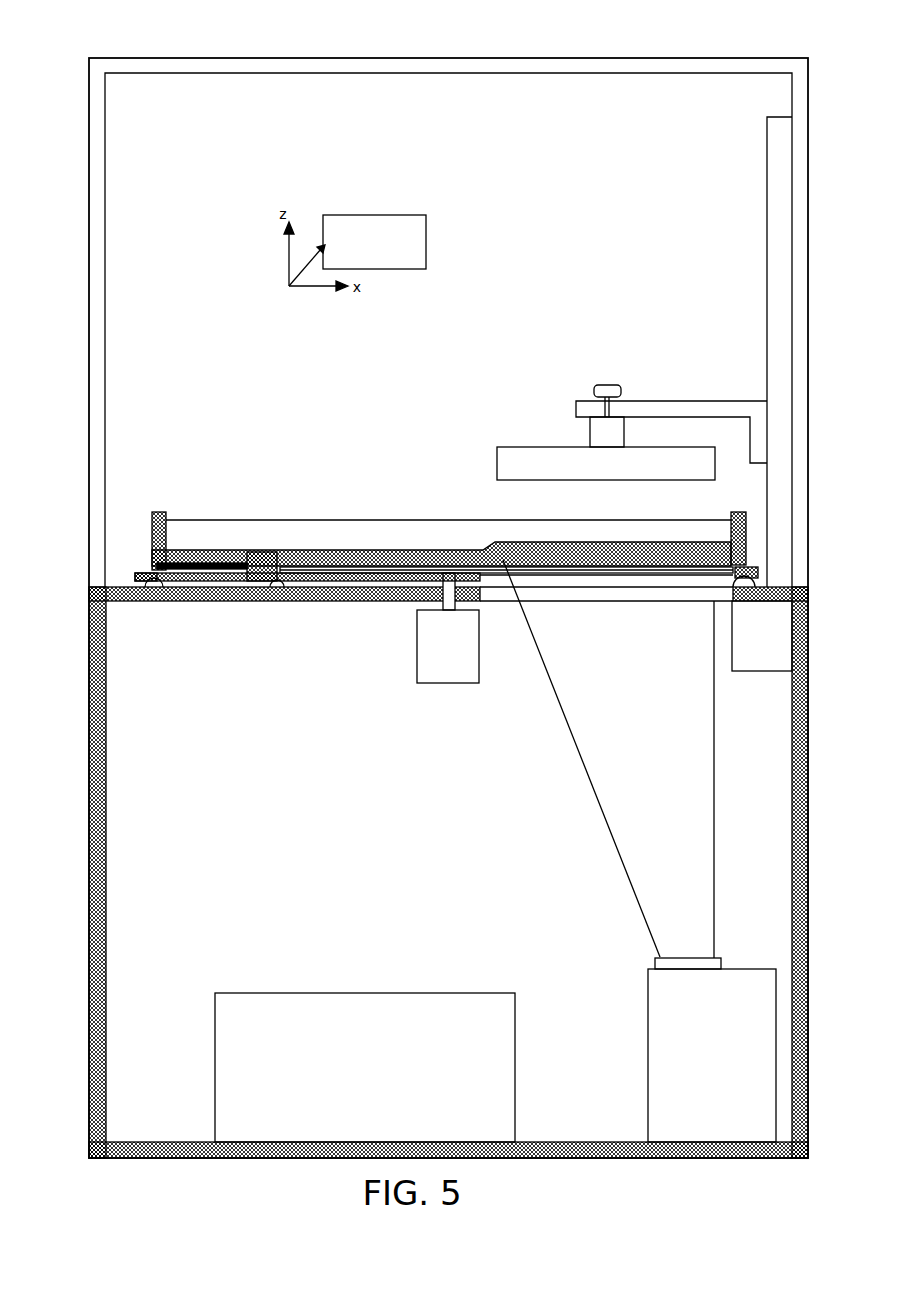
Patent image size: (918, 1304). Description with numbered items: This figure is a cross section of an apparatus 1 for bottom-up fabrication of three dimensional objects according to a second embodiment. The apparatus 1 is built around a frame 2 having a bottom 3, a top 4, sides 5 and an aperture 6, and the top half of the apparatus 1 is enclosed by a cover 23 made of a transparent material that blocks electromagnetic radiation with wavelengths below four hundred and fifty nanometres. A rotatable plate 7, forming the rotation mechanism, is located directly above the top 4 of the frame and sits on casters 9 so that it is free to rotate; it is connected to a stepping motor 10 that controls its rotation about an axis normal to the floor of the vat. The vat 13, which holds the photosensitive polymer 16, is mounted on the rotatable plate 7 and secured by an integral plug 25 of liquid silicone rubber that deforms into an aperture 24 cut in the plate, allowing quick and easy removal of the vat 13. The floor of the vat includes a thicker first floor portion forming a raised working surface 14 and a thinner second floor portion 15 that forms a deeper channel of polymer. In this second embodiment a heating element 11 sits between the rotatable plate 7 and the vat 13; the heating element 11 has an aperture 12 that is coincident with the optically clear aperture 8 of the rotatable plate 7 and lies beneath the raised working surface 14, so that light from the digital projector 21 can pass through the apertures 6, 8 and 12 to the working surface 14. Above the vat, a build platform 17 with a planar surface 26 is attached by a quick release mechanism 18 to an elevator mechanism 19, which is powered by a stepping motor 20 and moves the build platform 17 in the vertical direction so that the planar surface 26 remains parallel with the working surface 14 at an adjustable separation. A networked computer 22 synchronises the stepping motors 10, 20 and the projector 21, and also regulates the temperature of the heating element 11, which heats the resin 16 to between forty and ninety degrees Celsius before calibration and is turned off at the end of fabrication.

The apparatus 1 is at (631, 48).
The frame 2 is at (815, 697).
The bottom 3 is at (168, 1142).
The top 4 is at (252, 610).
The sides 5 is at (88, 845).
The aperture 6 is at (497, 602).
The rotatable plate 7 is at (143, 573).
The aperture 8 is at (740, 568).
The casters 9 is at (143, 583).
The stepping motor 10 is at (418, 642).
The heating element 11 is at (153, 565).
The aperture 12 is at (742, 553).
The vat 13 is at (160, 512).
The working surface 14 is at (550, 542).
The second floor portion 15 is at (262, 552).
The photosensitive polymer 16 is at (216, 518).
The build platform 17 is at (510, 453).
The quick release mechanism 18 is at (607, 383).
The elevator mechanism 19 is at (667, 400).
The stepping motor 20 is at (753, 672).
The digital projector 21 is at (643, 1007).
The networked computer 22 is at (366, 990).
The cover 23 is at (88, 130).
The aperture 24 is at (280, 577).
The plug 25 is at (272, 600).
The planar surface 26 is at (607, 477).